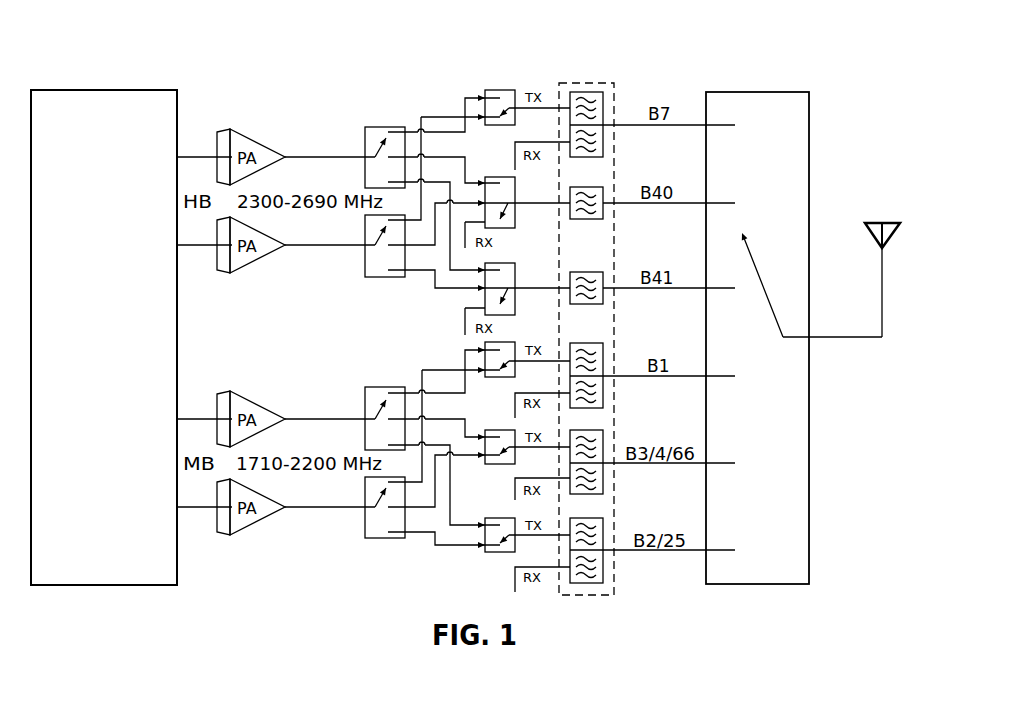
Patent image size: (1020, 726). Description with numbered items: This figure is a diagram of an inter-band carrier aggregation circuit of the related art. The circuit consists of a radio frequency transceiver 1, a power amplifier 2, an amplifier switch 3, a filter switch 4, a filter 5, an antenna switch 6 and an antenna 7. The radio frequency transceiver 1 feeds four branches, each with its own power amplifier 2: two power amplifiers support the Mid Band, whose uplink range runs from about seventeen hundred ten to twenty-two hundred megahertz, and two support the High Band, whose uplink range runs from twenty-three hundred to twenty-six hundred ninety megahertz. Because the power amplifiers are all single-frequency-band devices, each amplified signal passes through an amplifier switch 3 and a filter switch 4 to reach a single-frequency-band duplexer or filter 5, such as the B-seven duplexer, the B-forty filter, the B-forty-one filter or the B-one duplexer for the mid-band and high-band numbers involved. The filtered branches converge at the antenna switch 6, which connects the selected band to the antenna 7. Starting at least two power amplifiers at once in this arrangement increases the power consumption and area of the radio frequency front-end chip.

The radio frequency transceiver 1 is at (98, 90).
The power amplifier 2 is at (232, 130).
The amplifier switch 3 is at (377, 126).
The filter switch 4 is at (493, 92).
The filter 5 is at (575, 82).
The antenna switch 6 is at (722, 92).
The antenna 7 is at (868, 222).